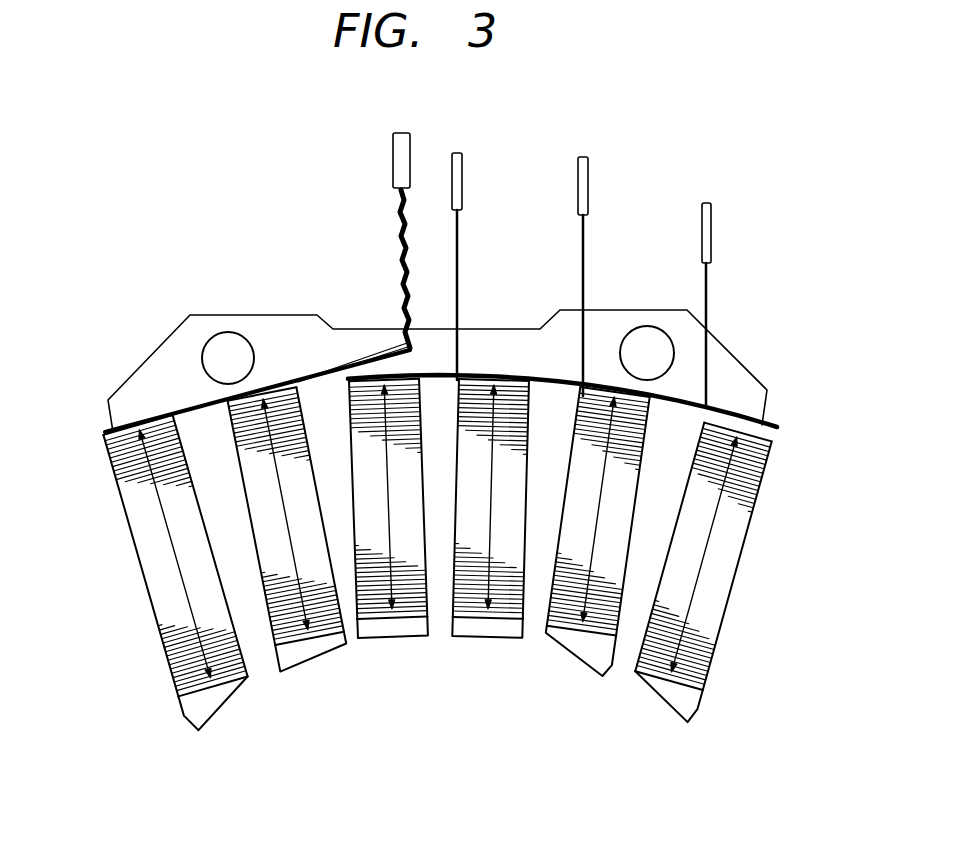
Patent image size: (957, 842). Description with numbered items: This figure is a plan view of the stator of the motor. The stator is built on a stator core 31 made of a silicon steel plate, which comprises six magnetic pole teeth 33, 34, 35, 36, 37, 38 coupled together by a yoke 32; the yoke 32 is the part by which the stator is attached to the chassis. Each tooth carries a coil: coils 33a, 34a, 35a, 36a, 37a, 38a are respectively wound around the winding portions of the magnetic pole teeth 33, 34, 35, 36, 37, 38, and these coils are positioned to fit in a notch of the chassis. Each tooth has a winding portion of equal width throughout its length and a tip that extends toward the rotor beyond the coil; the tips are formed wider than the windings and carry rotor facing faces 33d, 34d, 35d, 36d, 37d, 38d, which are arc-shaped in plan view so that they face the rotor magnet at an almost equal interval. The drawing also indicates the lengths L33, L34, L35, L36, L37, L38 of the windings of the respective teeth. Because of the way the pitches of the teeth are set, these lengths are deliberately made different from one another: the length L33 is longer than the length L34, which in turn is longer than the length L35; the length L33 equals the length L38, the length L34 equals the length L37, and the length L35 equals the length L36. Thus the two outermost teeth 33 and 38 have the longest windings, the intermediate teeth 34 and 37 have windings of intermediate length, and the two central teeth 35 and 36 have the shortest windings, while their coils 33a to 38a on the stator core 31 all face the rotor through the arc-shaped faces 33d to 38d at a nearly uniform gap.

The stator core 31 is at (641, 318).
The yoke 32 is at (505, 347).
The magnetic pole tooth 33 is at (731, 527).
The coil 33a is at (714, 630).
The length of winding 33c L33 is at (700, 575).
The rotor facing face 33d is at (660, 700).
The magnetic pole tooth 34 is at (653, 425).
The coil 34a is at (623, 505).
The length of winding 34c L34 is at (606, 646).
The rotor facing face 34d is at (563, 653).
The magnetic pole tooth 35 is at (530, 404).
The coil 35a is at (520, 478).
The length of winding 35c L35 is at (506, 638).
The rotor facing face 35d is at (462, 638).
The magnetic pole tooth 36 is at (418, 408).
The coil 36a is at (357, 488).
The length of winding 36c L36 is at (409, 635).
The rotor facing face 36d is at (380, 638).
The magnetic pole tooth 37 is at (296, 407).
The coil 37a is at (247, 520).
The length of winding 37c L37 is at (318, 643).
The rotor facing face 37d is at (287, 672).
The magnetic pole tooth 38 is at (135, 521).
The coil 38a is at (163, 603).
The length of winding 38c L38 is at (175, 568).
The rotor facing face 38d is at (212, 718).